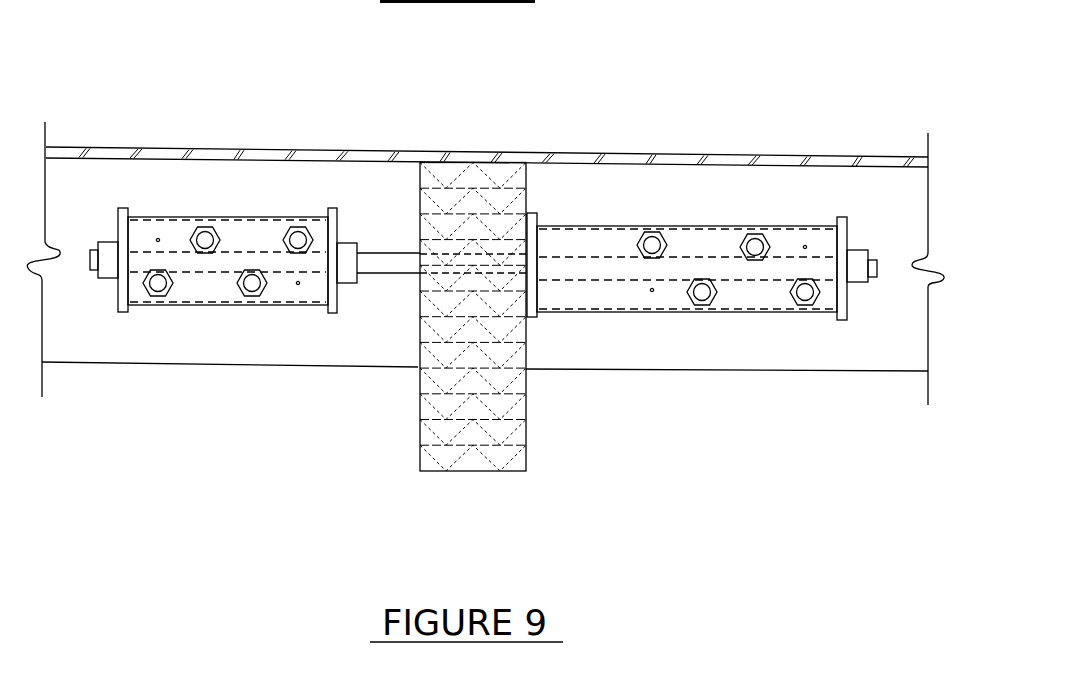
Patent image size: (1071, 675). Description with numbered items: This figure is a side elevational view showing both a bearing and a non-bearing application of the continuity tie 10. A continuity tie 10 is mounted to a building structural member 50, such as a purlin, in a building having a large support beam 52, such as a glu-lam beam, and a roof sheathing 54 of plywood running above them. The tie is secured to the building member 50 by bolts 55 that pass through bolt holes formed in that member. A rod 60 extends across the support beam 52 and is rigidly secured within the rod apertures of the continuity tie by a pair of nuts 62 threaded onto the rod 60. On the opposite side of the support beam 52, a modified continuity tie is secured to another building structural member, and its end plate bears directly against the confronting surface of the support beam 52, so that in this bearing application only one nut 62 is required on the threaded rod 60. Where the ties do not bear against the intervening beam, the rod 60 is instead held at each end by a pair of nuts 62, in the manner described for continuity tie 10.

The continuity tie 10 is at (270, 194).
The building structural member 50 is at (222, 297).
The support beam 52 is at (497, 473).
The roof sheathing 54 is at (586, 152).
The bolts 55 is at (248, 270).
The rod 60 is at (387, 274).
The nuts 62 is at (108, 242).